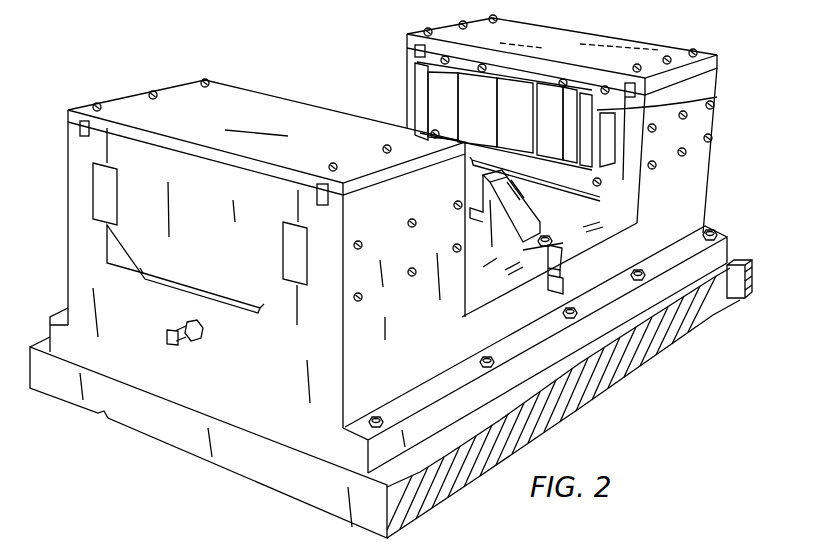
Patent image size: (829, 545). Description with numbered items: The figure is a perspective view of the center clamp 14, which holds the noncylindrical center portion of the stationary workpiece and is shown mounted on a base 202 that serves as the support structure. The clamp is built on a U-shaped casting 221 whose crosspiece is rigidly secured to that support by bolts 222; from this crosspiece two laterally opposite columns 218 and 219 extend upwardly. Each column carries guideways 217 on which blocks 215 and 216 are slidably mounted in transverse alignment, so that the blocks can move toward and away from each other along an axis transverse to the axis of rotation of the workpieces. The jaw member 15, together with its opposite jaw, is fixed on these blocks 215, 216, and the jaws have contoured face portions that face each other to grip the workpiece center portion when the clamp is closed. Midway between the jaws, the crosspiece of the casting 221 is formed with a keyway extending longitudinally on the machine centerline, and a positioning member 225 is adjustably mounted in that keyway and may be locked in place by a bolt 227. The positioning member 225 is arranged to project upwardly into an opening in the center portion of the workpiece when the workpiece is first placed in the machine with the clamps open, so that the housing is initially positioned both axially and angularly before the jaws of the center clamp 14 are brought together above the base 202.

The center clamp 14 is at (683, 219).
The jaw member 15 is at (547, 107).
The base plate 202 is at (277, 472).
The block 215 is at (713, 93).
The block 216 is at (280, 318).
The guideways 217 is at (107, 197).
The column 218 is at (407, 193).
The column 219 is at (716, 73).
The U-shaped casting 221 is at (497, 282).
The bolts 222 is at (376, 414).
The positioning member 225 is at (505, 243).
The bolt 227 is at (575, 228).